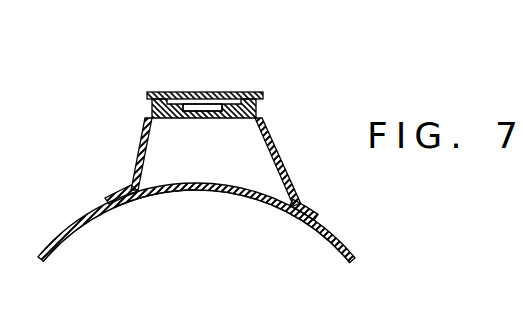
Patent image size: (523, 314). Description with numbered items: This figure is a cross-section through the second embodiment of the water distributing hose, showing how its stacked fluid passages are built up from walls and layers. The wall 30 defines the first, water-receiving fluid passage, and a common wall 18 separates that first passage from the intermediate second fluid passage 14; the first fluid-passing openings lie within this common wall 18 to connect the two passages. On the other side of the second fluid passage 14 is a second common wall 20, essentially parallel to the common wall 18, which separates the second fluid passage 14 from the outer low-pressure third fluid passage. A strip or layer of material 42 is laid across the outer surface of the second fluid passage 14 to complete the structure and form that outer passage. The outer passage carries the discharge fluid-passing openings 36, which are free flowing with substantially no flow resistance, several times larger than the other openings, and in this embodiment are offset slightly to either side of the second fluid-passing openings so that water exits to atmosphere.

The second fluid passage 14 is at (250, 167).
The common wall 18 is at (198, 191).
The common wall 20 is at (199, 118).
The wall 30 is at (335, 236).
The discharge fluid-passing openings 36 is at (207, 92).
The strip or layer of material 42 is at (252, 92).